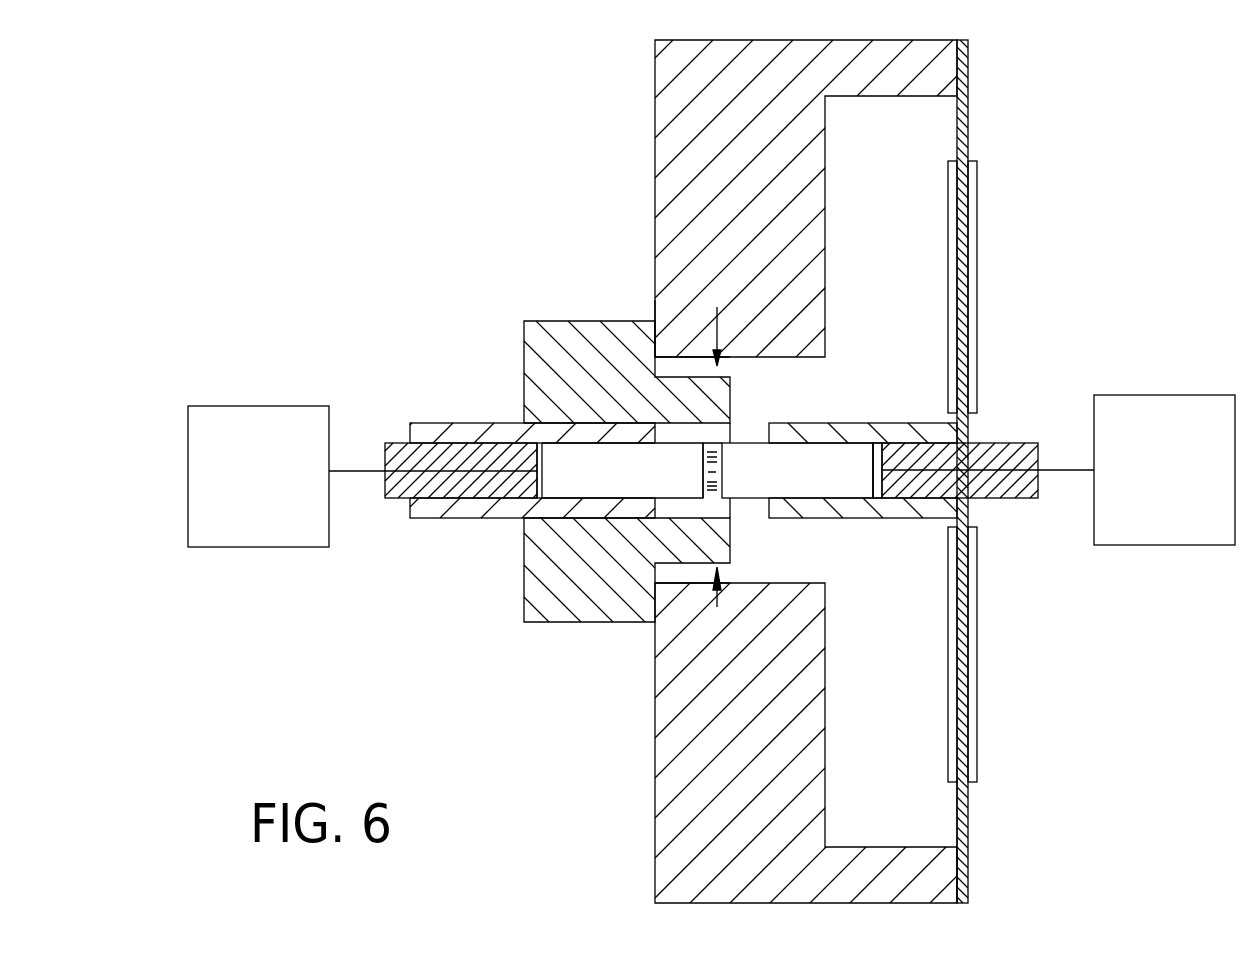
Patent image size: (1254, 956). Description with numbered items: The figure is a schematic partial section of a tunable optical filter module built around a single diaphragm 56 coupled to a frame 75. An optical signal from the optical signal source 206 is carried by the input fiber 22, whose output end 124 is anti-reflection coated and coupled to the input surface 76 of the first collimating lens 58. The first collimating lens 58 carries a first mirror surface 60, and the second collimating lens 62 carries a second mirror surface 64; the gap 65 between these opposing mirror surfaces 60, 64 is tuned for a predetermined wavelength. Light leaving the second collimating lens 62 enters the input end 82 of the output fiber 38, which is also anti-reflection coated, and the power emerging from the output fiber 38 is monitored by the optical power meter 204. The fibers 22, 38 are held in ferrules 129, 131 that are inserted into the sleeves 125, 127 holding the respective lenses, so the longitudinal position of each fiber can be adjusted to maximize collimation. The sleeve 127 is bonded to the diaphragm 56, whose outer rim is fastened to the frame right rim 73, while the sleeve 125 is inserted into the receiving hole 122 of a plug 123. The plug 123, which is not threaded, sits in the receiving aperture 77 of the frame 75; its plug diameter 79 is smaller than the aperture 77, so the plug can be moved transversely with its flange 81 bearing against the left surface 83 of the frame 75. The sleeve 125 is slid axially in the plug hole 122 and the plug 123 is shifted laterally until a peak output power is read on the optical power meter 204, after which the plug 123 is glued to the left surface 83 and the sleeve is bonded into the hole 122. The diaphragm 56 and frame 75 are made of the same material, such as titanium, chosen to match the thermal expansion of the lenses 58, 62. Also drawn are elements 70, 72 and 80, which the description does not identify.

The input fiber 22 is at (370, 473).
The output fiber 38 is at (1087, 473).
The diaphragm 56 is at (967, 815).
The first collimating lens 58 is at (650, 483).
The first mirror surface 60 is at (703, 499).
The second collimating lens 62 is at (815, 482).
The second mirror surface 64 is at (716, 499).
The gap 65 is at (713, 444).
The electrode 70 is at (948, 700).
The electrode 72 is at (977, 724).
The frame right rim 73 is at (969, 62).
The frame 75 is at (657, 812).
The first collimating lens input surface 76 is at (543, 457).
The receiving aperture 77 is at (733, 583).
The plug diameter 79 is at (717, 307).
The end plate 80 is at (874, 464).
The plug flange 81 is at (657, 334).
The input end of output fiber 82 is at (874, 498).
The left surface of frame 83 is at (655, 254).
The receiving hole in plug 122 is at (524, 519).
The plug 123 is at (578, 321).
The output end of input fiber 124 is at (537, 440).
The sleeve 125 is at (500, 423).
The sleeve 127 is at (915, 423).
The ferrule 129 is at (396, 441).
The ferrule 131 is at (996, 442).
The optical power meter 204 is at (1164, 470).
The optical signal source 206 is at (258, 476).